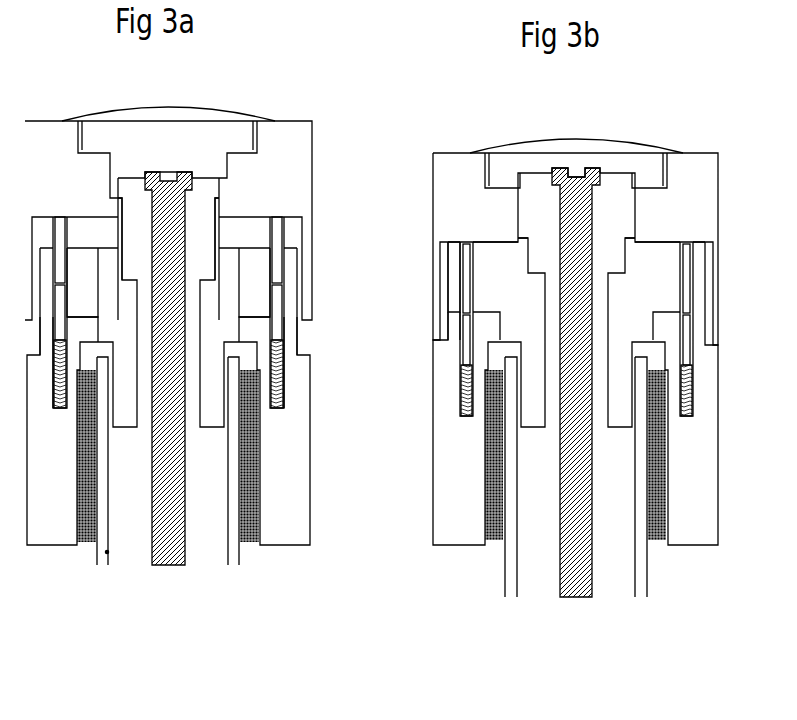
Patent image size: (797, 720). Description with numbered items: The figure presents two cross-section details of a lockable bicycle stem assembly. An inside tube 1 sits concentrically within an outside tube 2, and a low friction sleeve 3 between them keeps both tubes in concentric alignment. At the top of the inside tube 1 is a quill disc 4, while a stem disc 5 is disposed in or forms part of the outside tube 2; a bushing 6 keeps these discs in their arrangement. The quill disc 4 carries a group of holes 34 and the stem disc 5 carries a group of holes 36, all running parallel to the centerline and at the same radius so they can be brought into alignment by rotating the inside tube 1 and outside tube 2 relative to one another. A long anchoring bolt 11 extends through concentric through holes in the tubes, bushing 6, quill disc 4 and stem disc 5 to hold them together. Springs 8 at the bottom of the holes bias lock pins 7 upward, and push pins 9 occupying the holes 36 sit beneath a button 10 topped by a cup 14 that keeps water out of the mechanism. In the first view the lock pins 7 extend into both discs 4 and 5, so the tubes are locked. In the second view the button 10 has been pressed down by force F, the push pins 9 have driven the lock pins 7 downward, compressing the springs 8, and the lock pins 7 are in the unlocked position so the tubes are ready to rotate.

In FIG. 3a, the inside tube 1 is at (232, 552).
In FIG. 3b, the inside tube 1 is at (512, 566).
In FIG. 3a, the outside tube 2 is at (277, 493).
In FIG. 3b, the outside tube 2 is at (391, 476).
In FIG. 3a, the low friction sleeve 3 is at (247, 525).
In FIG. 3b, the low friction sleeve 3 is at (495, 521).
In FIG. 3a, the quill disc 4 is at (241, 302).
In FIG. 3b, the quill disc 4 is at (453, 283).
In FIG. 3a, the stem disc 5 is at (288, 352).
In FIG. 3b, the stem disc 5 is at (456, 358).
In FIG. 3a, the bushing 6 is at (198, 235).
In FIG. 3b, the bushing 6 is at (542, 220).
In FIG. 3a, the lock pin 7 is at (275, 327).
In FIG. 3b, the lock pin 7 is at (468, 337).
In FIG. 3a, the spring 8 is at (275, 387).
In FIG. 3b, the spring 8 is at (460, 397).
In FIG. 3a, the push pin 9 is at (277, 238).
In FIG. 3b, the push pin 9 is at (468, 252).
In FIG. 3a, the button 10 is at (275, 171).
In FIG. 3b, the button 10 is at (460, 178).
In FIG. 3a, the anchoring bolt 11 is at (163, 553).
In FIG. 3b, the anchoring bolt 11 is at (575, 588).
In FIG. 3a, the cup 14 is at (167, 115).
In FIG. 3b, the cup 14 is at (562, 150).
In FIG. 3b, the holes 34 is at (688, 272).
In FIG. 3b, the holes 36 is at (688, 359).